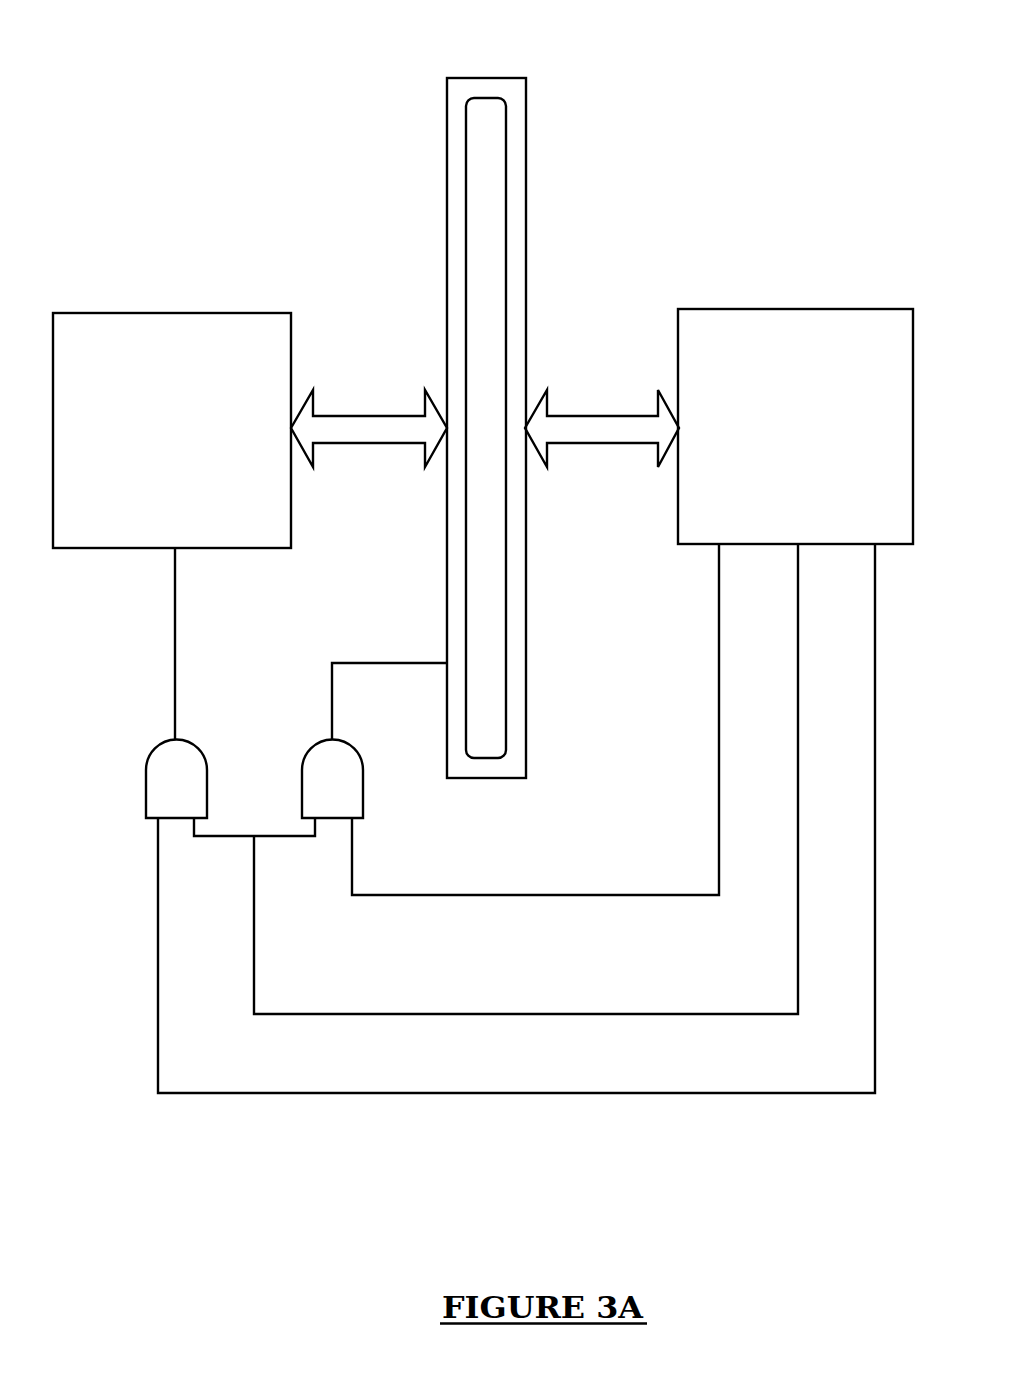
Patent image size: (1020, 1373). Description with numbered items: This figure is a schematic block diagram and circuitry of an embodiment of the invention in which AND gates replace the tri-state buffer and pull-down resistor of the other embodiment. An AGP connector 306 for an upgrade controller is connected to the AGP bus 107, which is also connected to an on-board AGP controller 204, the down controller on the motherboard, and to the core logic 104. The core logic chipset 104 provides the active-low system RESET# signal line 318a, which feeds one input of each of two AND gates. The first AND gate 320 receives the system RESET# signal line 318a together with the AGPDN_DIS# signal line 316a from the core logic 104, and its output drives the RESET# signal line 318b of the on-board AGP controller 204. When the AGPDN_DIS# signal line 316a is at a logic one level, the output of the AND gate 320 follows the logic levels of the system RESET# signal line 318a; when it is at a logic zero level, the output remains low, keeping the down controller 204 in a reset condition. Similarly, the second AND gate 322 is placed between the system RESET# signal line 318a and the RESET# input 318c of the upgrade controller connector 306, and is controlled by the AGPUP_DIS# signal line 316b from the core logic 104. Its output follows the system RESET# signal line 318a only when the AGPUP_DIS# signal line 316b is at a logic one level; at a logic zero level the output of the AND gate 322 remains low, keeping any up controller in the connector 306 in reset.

The core logic chipset 104 is at (855, 320).
The AGP bus 107 is at (357, 420).
The on-board AGP controller 204 is at (232, 323).
The AGP connector 306 is at (502, 88).
The AGPDN_DIS# signal line 316a is at (313, 1097).
The AGPUP_DIS# signal line 316b is at (588, 892).
The system RESET# signal line 318a is at (411, 1011).
The RESET# signal line 318b is at (173, 688).
The RESET# input 318c is at (403, 660).
The AND gate 320 is at (152, 770).
The AND gate 322 is at (353, 766).